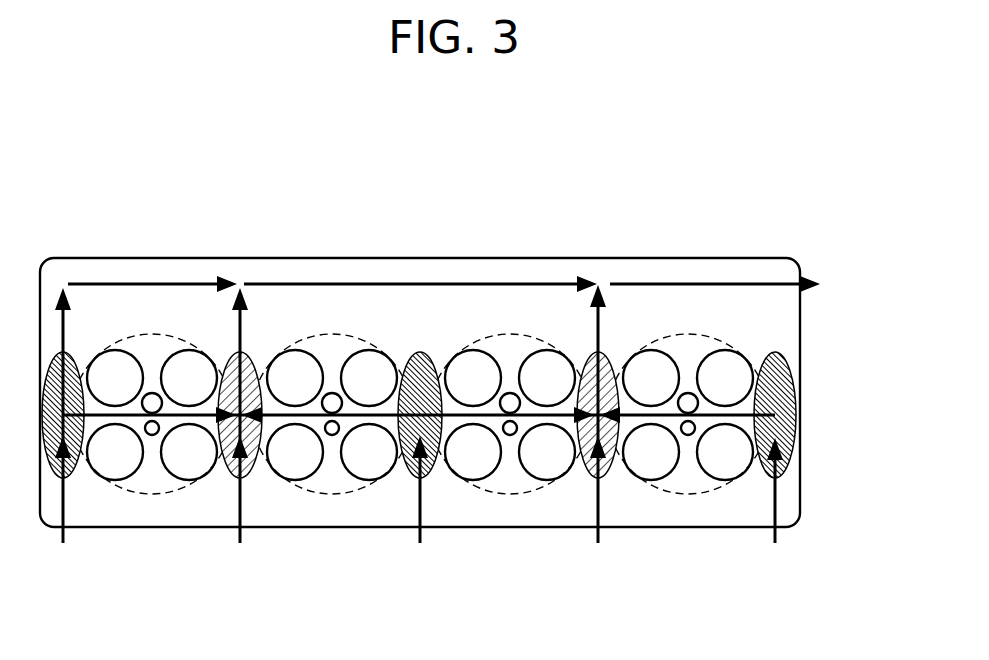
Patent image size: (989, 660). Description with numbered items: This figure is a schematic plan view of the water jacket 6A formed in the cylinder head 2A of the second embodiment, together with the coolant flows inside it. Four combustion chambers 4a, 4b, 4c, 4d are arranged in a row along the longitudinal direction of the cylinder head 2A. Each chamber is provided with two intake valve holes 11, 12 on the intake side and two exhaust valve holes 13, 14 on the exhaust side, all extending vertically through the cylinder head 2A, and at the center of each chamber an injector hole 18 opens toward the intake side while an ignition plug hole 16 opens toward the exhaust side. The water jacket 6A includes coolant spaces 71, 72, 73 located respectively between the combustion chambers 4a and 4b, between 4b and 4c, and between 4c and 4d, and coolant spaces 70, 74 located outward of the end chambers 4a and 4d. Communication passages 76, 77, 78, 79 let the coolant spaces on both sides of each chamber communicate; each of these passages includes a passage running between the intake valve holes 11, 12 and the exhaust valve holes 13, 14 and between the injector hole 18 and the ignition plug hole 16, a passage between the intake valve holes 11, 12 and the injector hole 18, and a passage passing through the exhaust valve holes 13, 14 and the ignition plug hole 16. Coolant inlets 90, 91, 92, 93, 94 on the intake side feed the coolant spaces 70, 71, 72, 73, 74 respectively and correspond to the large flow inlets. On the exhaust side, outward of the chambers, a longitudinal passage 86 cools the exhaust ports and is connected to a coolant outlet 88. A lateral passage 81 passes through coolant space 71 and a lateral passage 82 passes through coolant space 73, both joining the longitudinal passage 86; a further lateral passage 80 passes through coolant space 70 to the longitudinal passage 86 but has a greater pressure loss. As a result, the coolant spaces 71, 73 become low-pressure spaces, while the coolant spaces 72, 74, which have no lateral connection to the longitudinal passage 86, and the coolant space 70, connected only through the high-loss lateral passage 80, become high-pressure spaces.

The cylinder head 2A is at (728, 259).
The combustion chamber 4a is at (160, 334).
The combustion chamber 4b is at (356, 334).
The combustion chamber 4c is at (509, 334).
The combustion chamber 4d is at (690, 334).
The water jacket 6A is at (750, 282).
The intake valve hole 11 is at (293, 457).
The intake valve hole 12 is at (373, 457).
The exhaust valve hole 13 is at (297, 352).
The exhaust valve hole 14 is at (390, 352).
The ignition plug hole 16 is at (333, 392).
The injector hole 18 is at (333, 447).
The coolant space 70 is at (96, 352).
The coolant space 71 is at (262, 350).
The coolant space 72 is at (436, 352).
The coolant space 73 is at (620, 352).
The coolant space 74 is at (785, 352).
The communication passage 76 is at (165, 440).
The communication passage 77 is at (352, 455).
The communication passage 78 is at (530, 478).
The communication passage 79 is at (707, 450).
The lateral passage 80 is at (61, 350).
The lateral passage 81 is at (226, 283).
The lateral passage 82 is at (594, 333).
The longitudinal passage 86 is at (525, 283).
The coolant outlet 88 is at (805, 296).
The coolant inlet 90 is at (66, 532).
The coolant inlet 91 is at (240, 533).
The coolant inlet 92 is at (422, 535).
The coolant inlet 93 is at (600, 537).
The coolant inlet 94 is at (777, 537).